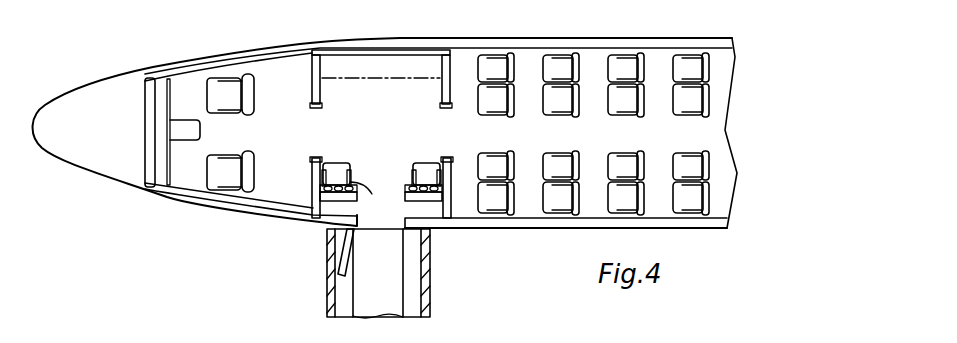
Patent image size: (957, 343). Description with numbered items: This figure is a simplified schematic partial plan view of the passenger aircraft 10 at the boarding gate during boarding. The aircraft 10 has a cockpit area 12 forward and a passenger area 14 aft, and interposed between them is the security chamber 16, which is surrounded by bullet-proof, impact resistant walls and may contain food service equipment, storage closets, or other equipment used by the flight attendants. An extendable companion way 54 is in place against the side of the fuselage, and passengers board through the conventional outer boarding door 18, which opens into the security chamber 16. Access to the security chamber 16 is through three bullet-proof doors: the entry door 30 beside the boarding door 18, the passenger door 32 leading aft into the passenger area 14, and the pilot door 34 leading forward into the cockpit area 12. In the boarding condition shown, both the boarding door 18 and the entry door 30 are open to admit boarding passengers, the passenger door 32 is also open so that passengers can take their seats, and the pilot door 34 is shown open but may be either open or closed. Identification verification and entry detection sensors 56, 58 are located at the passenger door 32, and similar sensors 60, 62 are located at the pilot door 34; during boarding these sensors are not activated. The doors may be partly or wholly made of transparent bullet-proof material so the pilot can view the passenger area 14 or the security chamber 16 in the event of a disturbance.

The passenger aircraft 10 is at (749, 48).
The cockpit area 12 is at (190, 97).
The passenger area 14 is at (527, 77).
The security chamber 16 is at (381, 87).
The boarding door 18 is at (397, 222).
The entry door 30 is at (312, 158).
The passenger door 32 is at (447, 128).
The pilot door 34 is at (313, 139).
The extendable companion way 54 is at (422, 287).
The identification verification and entry detection sensor 56 is at (452, 162).
The identification verification and entry detection sensor 58 is at (450, 104).
The identification verification and entry detection sensor 60 is at (283, 192).
The identification verification and entry detection sensor 62 is at (313, 102).